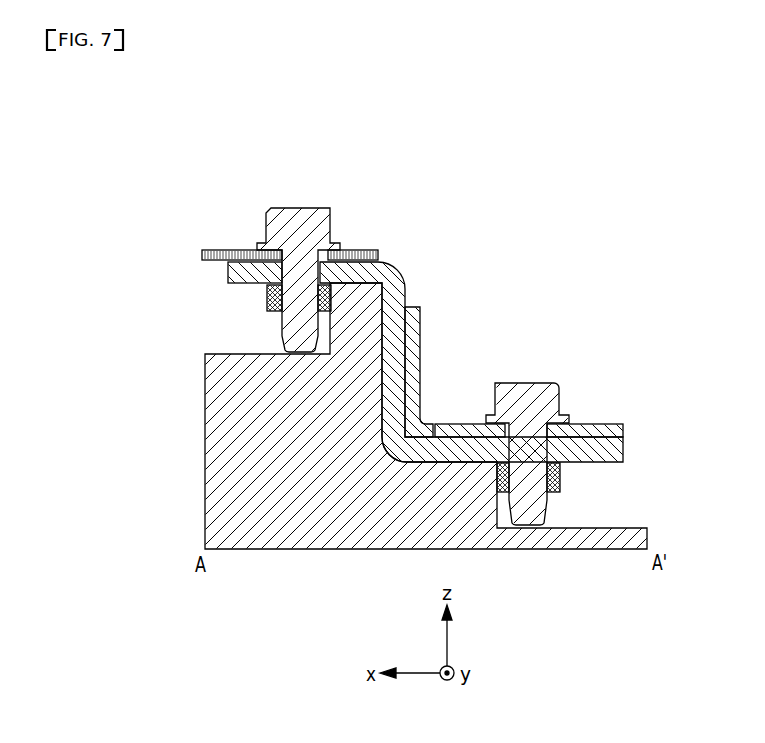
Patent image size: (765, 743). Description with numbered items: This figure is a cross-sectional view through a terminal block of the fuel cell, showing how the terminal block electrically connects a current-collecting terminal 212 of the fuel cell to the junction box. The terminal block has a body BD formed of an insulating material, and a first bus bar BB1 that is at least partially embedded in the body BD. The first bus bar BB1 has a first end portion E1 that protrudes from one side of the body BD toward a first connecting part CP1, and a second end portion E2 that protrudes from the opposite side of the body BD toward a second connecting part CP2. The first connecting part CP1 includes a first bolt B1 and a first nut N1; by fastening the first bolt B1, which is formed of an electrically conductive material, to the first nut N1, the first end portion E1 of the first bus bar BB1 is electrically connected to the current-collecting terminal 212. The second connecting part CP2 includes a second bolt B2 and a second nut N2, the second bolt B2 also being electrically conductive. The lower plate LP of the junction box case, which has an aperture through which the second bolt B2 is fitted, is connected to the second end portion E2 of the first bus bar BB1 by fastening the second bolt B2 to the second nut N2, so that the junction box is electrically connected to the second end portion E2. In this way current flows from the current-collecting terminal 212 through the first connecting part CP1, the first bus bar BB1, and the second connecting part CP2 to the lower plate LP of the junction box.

The second end portion E2 is at (298, 162).
The lower plate LP is at (373, 255).
The second bolt B2 is at (290, 297).
The second nut N2 is at (267, 303).
The second connecting part CP2 is at (182, 293).
The body BD is at (420, 315).
The first bus bar BB1 is at (399, 340).
The first end portion E1 is at (532, 340).
The first bolt B1 is at (547, 397).
The first nut N1 is at (558, 472).
The first connecting part CP1 is at (645, 353).
The current-collecting terminal 212 is at (617, 432).